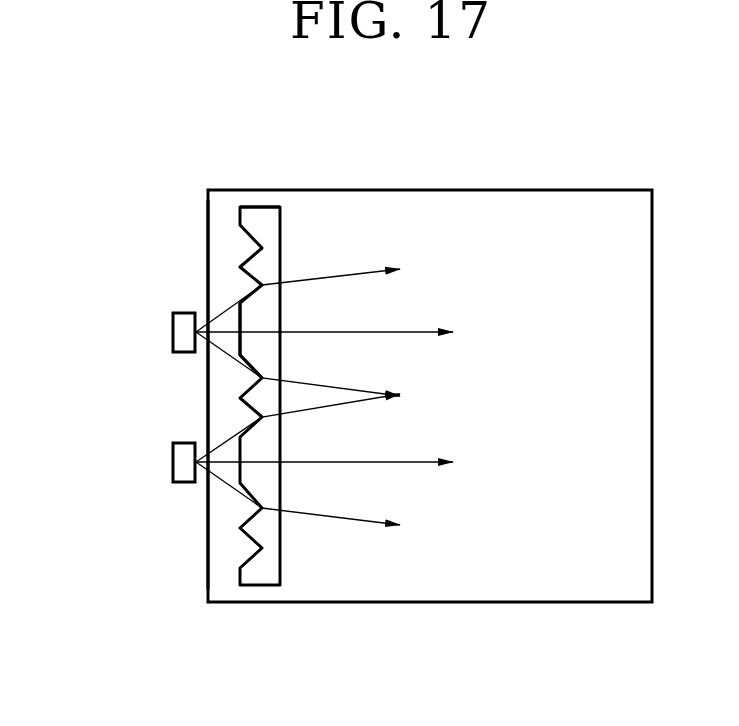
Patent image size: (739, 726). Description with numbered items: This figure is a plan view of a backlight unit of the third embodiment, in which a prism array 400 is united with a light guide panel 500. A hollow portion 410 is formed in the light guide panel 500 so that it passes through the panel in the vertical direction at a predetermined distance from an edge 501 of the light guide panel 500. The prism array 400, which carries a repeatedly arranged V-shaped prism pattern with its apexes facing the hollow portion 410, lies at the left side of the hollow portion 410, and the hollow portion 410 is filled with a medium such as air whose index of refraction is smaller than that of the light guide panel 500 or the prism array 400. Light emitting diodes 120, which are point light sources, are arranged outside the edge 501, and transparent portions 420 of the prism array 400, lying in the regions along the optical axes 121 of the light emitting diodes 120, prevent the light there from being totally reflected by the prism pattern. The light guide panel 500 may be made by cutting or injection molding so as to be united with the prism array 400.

The light guide panel 500 is at (541, 190).
The edge of the light guide panel 501 is at (208, 247).
The prism array 400 is at (240, 240).
The hollow portion 410 is at (262, 207).
The transparent portions 420 is at (240, 325).
The light emitting diodes 120 is at (173, 462).
The optical axes 121 is at (395, 463).